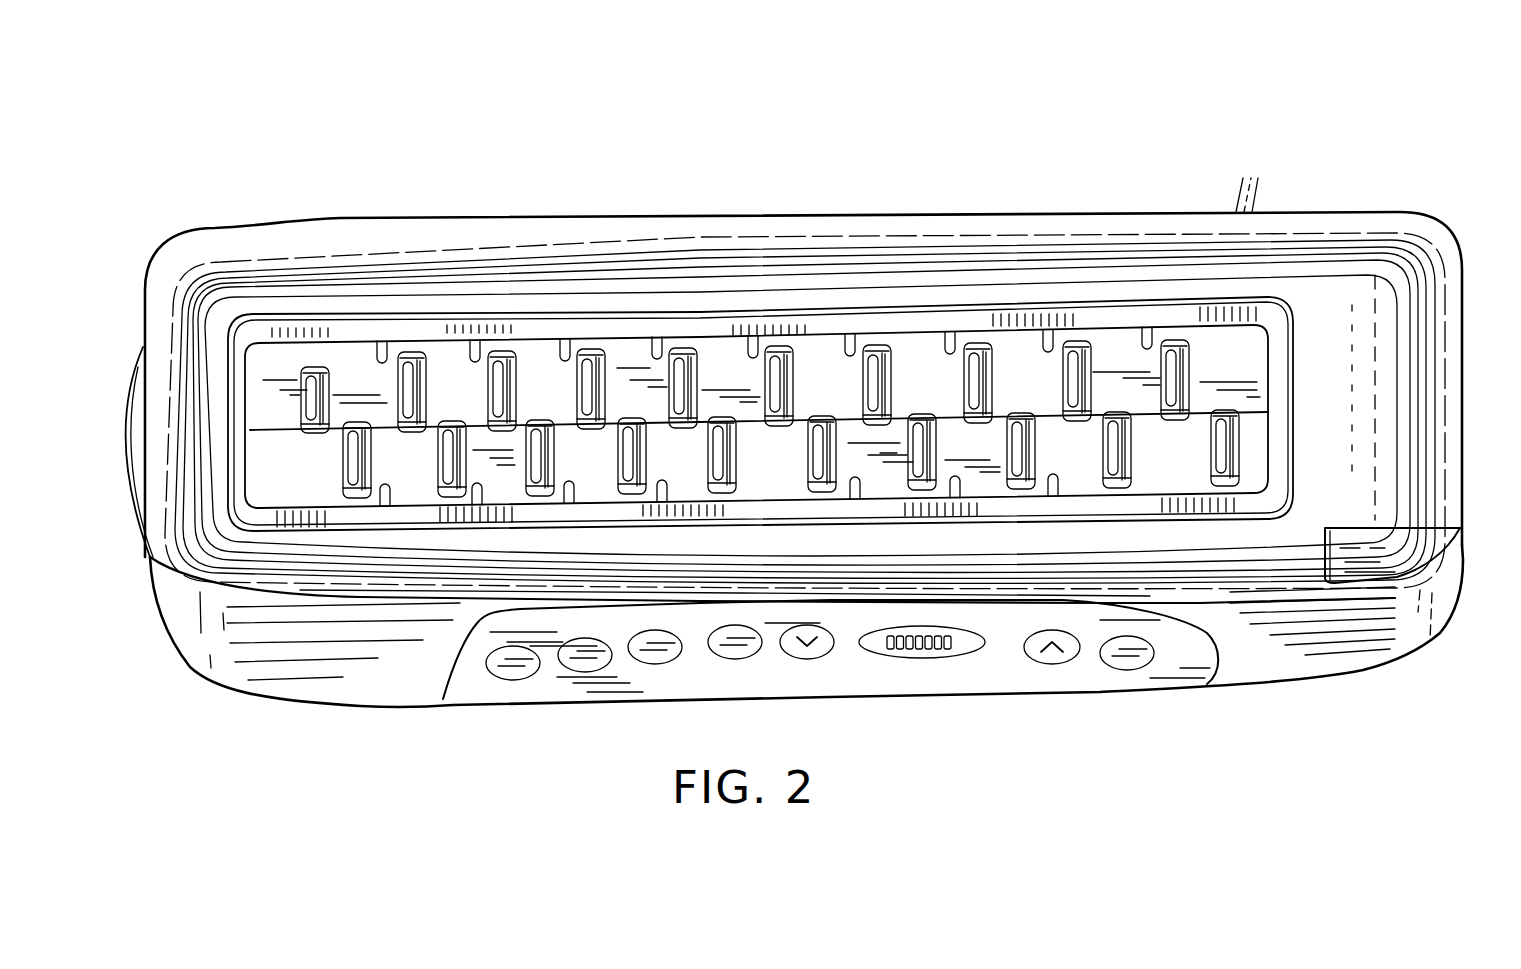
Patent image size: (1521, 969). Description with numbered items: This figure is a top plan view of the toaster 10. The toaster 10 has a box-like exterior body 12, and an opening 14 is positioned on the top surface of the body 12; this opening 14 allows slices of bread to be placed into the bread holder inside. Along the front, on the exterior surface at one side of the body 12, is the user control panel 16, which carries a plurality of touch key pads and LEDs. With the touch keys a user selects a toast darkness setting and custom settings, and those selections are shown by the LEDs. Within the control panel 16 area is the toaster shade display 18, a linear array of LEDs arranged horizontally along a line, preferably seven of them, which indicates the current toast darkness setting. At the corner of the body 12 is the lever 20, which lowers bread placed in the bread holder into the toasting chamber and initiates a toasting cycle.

The toaster 10 is at (899, 141).
The exterior body 12 is at (1068, 214).
The opening 14 is at (630, 357).
The user control panel 16 is at (577, 688).
The toaster shade display 18 is at (930, 653).
The lever 20 is at (1460, 553).